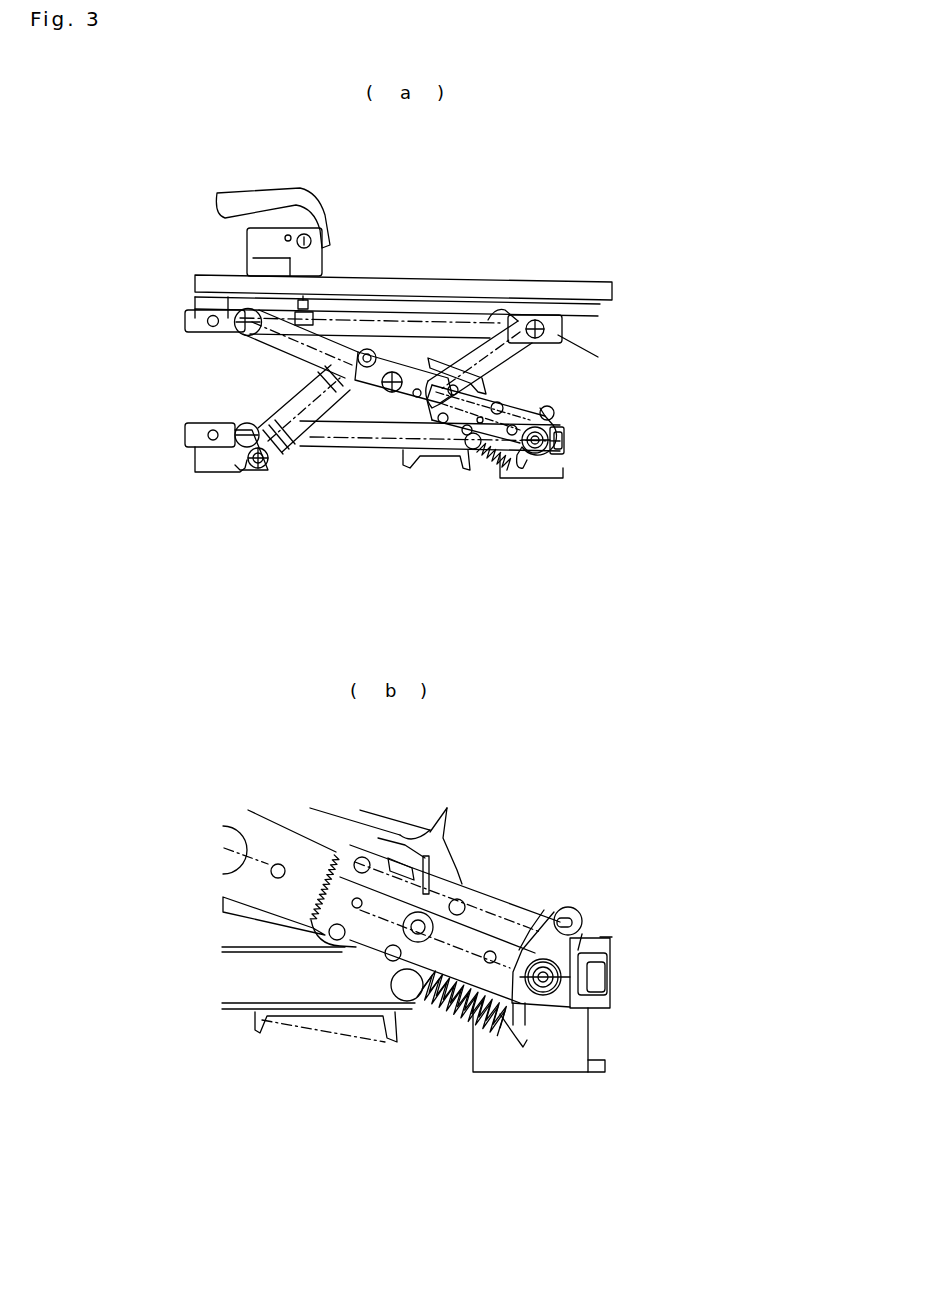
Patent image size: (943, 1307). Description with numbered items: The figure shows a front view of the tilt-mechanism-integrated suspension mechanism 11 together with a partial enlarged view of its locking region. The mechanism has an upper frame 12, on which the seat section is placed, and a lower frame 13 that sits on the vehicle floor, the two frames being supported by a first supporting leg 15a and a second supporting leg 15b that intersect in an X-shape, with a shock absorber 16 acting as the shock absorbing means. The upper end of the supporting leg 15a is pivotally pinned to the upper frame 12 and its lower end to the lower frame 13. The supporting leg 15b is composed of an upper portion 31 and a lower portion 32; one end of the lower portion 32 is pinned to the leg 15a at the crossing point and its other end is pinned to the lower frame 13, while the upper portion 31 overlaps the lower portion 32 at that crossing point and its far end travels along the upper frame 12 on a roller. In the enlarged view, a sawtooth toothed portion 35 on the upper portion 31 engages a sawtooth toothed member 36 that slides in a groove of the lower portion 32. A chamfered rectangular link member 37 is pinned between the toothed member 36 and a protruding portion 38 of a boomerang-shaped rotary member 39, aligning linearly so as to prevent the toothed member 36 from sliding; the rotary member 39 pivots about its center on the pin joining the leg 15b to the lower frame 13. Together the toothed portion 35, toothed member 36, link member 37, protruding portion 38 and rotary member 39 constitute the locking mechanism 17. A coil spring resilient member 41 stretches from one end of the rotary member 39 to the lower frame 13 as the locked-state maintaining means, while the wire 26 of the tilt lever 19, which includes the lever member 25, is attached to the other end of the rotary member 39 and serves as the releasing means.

The tilt-mechanism-integrated suspension mechanism 11 is at (578, 147).
The upper frame 12 is at (592, 283).
The lower frame 13 is at (388, 455).
The first supporting leg 15a is at (518, 333).
The second supporting leg 15b is at (266, 373).
The shock absorber 16 is at (303, 425).
The locking mechanism 17 is at (590, 448).
The tilt lever 19 is at (244, 173).
The lever member 25 is at (305, 192).
The wire 26 is at (532, 401).
The upper portion 31 is at (314, 344).
The lower portion 32 is at (522, 405).
The toothed portion 35 is at (320, 900).
The toothed member 36 is at (388, 917).
The link member 37 is at (456, 938).
The protruding portion 38 is at (514, 965).
The rotary member 39 is at (590, 937).
The resilient member 41 is at (487, 458).